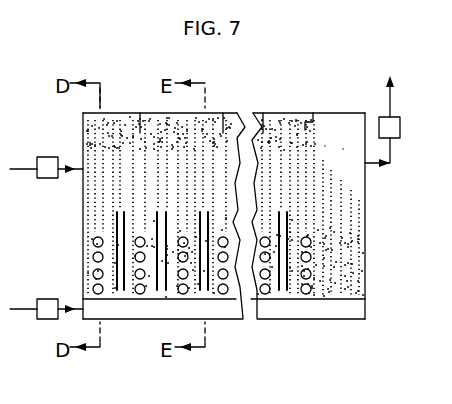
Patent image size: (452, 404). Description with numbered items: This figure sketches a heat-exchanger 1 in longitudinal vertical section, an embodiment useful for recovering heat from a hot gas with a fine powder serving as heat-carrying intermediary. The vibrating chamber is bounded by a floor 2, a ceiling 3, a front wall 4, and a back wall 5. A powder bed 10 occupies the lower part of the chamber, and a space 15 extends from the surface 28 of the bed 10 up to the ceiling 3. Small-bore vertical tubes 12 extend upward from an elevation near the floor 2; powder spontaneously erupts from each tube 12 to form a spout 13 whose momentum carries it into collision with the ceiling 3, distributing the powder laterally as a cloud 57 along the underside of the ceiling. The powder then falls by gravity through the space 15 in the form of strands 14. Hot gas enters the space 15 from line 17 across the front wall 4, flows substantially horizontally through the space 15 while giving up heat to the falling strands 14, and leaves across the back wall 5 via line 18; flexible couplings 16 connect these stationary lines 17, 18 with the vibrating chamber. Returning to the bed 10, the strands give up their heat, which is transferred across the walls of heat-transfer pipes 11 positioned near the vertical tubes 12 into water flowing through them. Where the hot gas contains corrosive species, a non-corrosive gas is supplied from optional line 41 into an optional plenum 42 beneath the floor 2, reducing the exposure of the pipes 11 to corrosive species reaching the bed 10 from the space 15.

The heat-exchanger 1 is at (134, 70).
The floor 2 is at (200, 299).
The ceiling 3 is at (283, 112).
The front wall 4 is at (83, 118).
The back wall 5 is at (365, 182).
The powder bed 10 is at (343, 264).
The heat-transfer pipes 11 is at (93, 242).
The vertical tubes 12 is at (115, 230).
The spout 13 is at (165, 143).
The strands 14 is at (325, 145).
The space 15 is at (343, 148).
The flexible couplings 16 is at (53, 157).
The line 17 is at (25, 169).
The line 18 is at (390, 95).
The surface 28 is at (345, 226).
The line 41 is at (25, 309).
The plenum 42 is at (120, 310).
The cloud 57 is at (313, 113).